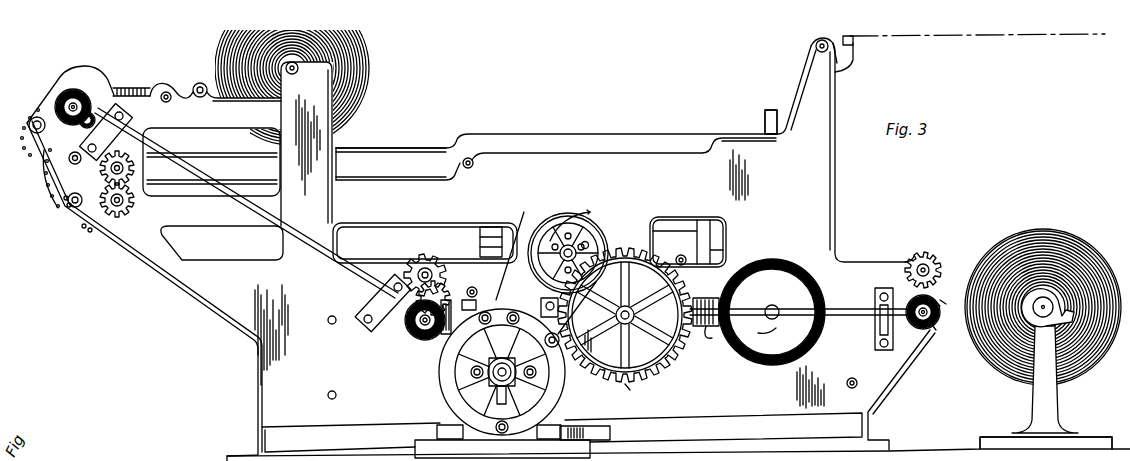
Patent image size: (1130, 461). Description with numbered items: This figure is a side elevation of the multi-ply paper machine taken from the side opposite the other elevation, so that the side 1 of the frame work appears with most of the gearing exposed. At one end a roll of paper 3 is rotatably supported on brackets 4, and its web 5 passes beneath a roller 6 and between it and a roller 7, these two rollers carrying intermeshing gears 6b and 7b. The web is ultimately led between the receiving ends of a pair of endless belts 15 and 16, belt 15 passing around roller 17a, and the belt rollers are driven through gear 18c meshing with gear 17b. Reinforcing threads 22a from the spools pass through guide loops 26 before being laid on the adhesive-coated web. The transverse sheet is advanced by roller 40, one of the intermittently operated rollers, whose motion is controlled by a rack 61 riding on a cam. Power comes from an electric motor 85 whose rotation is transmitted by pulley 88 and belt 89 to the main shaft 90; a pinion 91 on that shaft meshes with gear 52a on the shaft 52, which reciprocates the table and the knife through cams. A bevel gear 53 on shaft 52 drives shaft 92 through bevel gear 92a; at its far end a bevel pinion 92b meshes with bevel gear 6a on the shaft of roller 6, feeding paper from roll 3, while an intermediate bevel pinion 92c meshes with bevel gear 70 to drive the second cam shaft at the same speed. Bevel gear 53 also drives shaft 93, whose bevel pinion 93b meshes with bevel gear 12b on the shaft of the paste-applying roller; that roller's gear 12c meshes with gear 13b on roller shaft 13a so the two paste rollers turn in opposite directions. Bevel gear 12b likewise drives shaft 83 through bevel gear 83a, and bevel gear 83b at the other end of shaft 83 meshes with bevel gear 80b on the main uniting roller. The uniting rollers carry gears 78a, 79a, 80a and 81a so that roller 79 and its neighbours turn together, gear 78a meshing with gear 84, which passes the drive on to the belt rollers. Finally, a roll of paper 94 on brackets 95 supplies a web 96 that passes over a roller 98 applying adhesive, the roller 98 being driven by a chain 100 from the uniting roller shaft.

The side of frame work 1 is at (578, 249).
The roll of paper 3 is at (1088, 254).
The brackets 4 is at (1055, 405).
The web 5 is at (947, 307).
The roller 6 is at (931, 329).
The bevel gear 6a is at (934, 326).
The gear 6b is at (944, 302).
The roller 7 is at (926, 251).
The gear 7b is at (910, 248).
The bevel gear 12b is at (404, 343).
The gear 12c is at (428, 347).
The roller shaft 13a is at (426, 267).
The gear 13b is at (444, 292).
The endless belt 15 is at (409, 149).
The endless belt 16 is at (350, 182).
The roller 17a is at (462, 159).
The gear 17b is at (78, 213).
The gear 18c is at (113, 230).
The threads 22a is at (946, 33).
The guide loops 26 is at (853, 33).
The roller 40 is at (681, 225).
The shaft 52 is at (625, 315).
The gear 52a is at (630, 391).
The bevel gear 53 is at (599, 344).
The rack 61 is at (769, 110).
The bevel gear 70 is at (775, 263).
The gear 78a is at (63, 204).
The roller 79 is at (50, 164).
The gear 79a is at (53, 174).
The gear 80a is at (48, 97).
The bevel gear 80b is at (58, 88).
The gear 81a is at (31, 117).
The shaft 83 is at (232, 201).
The bevel gear 83a is at (400, 328).
The bevel gear 83b is at (100, 94).
The gear 84 is at (87, 234).
The electric motor 85 is at (443, 396).
The pulley 88 is at (597, 236).
The belt 89 is at (525, 212).
The main shaft 90 is at (590, 248).
The pinion 91 is at (570, 235).
The shaft 92 is at (839, 308).
The bevel gear 92a is at (686, 295).
The bevel pinion 92b is at (892, 290).
The bevel pinion 92c is at (706, 331).
The shaft 93 is at (545, 303).
The bevel pinion 93b is at (448, 300).
The roll of paper 94 is at (363, 68).
The brackets 95 is at (323, 140).
The web 96 is at (203, 83).
The roller 98 is at (172, 83).
The chain 100 is at (141, 88).